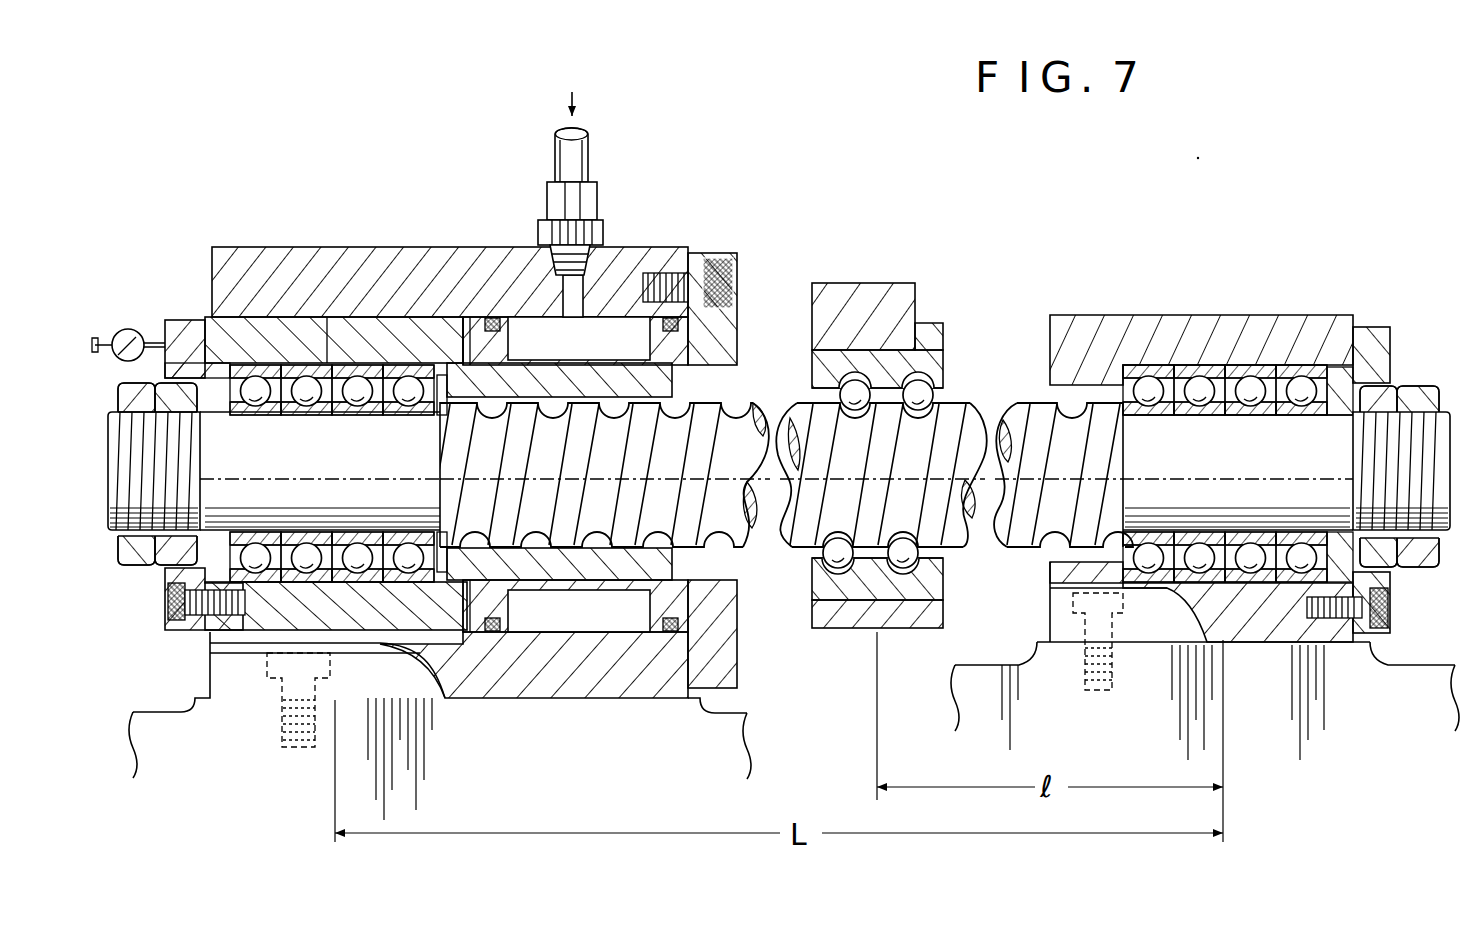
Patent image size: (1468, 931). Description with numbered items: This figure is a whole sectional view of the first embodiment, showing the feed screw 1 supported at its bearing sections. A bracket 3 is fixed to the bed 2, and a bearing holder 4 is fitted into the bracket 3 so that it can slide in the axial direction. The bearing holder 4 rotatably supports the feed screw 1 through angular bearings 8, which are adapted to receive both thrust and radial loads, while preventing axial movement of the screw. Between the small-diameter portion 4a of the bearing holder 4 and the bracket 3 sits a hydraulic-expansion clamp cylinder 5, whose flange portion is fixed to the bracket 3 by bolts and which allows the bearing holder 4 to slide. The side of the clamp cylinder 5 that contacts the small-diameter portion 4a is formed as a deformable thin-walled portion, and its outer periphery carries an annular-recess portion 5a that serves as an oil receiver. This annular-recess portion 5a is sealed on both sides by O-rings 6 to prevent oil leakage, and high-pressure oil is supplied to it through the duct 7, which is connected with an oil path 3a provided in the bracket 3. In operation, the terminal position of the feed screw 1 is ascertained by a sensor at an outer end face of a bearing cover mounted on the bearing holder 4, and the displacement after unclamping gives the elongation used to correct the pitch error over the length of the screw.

The feed screw 1 is at (763, 467).
The bed 2 is at (622, 715).
The bracket 3 is at (305, 262).
The oil path 3a is at (573, 293).
The bearing holder 4 is at (420, 330).
The small-diameter portion 4a is at (667, 568).
The hydraulic-expansion clamp cylinder 5 is at (507, 340).
The annular-recess portion 5a is at (584, 610).
The O-rings 6 is at (492, 634).
The duct 7 is at (597, 190).
The angular bearings 8 is at (327, 373).